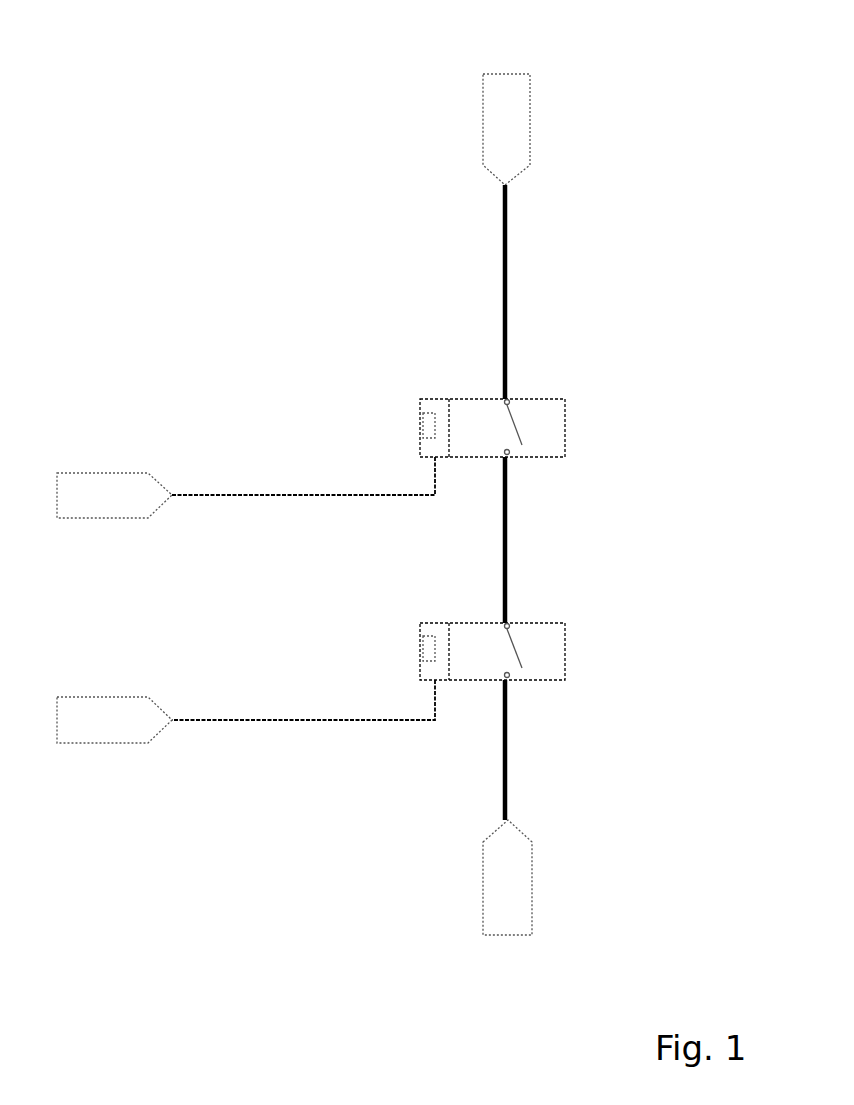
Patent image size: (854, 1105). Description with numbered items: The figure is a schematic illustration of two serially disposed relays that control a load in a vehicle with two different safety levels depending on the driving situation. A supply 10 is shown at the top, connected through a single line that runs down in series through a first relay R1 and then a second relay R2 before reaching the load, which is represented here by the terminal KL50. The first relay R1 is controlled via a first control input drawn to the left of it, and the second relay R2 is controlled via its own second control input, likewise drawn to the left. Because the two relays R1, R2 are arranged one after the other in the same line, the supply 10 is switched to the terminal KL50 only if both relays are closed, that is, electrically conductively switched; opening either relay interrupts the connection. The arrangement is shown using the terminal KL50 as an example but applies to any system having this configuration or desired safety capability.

The supply 10 is at (480, 120).
The first relay R1 is at (555, 399).
The second relay R2 is at (555, 623).
The terminal 50 KL50 is at (483, 896).